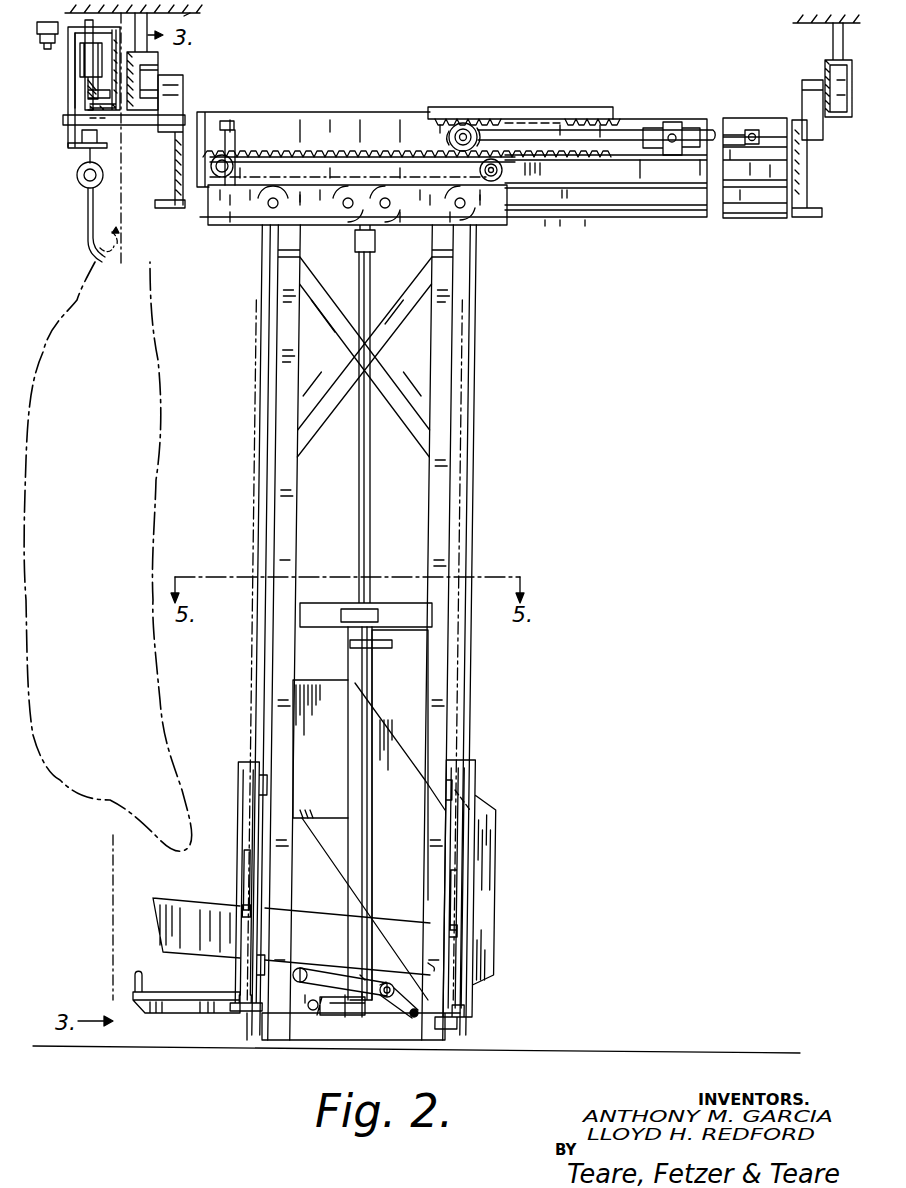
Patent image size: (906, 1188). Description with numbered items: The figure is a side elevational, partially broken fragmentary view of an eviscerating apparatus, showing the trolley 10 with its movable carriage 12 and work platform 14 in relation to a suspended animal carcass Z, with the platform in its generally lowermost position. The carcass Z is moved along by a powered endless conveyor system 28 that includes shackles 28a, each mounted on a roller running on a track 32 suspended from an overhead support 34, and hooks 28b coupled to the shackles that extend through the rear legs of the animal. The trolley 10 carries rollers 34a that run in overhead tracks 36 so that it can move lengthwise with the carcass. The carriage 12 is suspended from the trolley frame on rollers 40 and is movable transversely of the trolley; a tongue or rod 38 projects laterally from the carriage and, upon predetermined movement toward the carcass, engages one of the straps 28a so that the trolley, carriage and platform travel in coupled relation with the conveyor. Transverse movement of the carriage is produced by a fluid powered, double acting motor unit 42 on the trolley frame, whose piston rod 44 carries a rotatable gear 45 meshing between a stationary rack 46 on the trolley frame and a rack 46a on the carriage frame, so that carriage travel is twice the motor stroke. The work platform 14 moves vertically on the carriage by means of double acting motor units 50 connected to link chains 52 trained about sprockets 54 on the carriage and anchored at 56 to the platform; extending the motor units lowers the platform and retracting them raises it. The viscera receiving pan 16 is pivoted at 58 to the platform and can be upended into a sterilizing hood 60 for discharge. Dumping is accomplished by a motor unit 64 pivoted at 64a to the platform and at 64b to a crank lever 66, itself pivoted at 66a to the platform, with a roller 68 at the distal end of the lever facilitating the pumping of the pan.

The trolley 10 is at (183, 97).
The carriage 12 is at (457, 376).
The work platform 14 is at (160, 1025).
The receptacle or pan 16 is at (150, 940).
The powered endless conveyor system 28 is at (45, 48).
The shackles 28a is at (73, 148).
The hooks 28b is at (82, 225).
The track 32 is at (95, 100).
The overhead support 34 is at (195, 15).
The rollers 34a is at (150, 78).
The overhead tracks 36 is at (135, 110).
The tongue or rod 38 is at (78, 120).
The rollers 40 is at (233, 157).
The fluid powered reciprocal double acting motor unit 42 is at (744, 120).
The piston rod 44 is at (560, 133).
The rotatable gear 45 is at (442, 139).
The stationary rack 46 is at (472, 108).
The rack 46a is at (355, 152).
The motor units 50 is at (372, 668).
The link chains 52 is at (262, 300).
The sprockets 54 is at (235, 215).
The anchor 56 is at (240, 895).
The pivot 58 is at (407, 972).
The sterilizing hood 60 is at (395, 722).
The motor unit 64 is at (345, 1015).
The pivot 64a is at (310, 1008).
The pivot 64b is at (414, 1013).
The crank lever 66 is at (377, 1002).
The pivot 66a is at (381, 984).
The roller 68 is at (305, 995).
The carcass Z is at (163, 415).